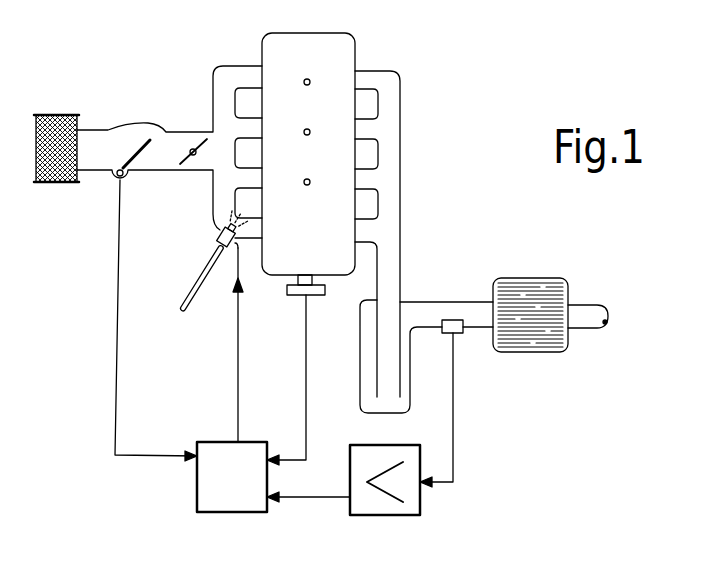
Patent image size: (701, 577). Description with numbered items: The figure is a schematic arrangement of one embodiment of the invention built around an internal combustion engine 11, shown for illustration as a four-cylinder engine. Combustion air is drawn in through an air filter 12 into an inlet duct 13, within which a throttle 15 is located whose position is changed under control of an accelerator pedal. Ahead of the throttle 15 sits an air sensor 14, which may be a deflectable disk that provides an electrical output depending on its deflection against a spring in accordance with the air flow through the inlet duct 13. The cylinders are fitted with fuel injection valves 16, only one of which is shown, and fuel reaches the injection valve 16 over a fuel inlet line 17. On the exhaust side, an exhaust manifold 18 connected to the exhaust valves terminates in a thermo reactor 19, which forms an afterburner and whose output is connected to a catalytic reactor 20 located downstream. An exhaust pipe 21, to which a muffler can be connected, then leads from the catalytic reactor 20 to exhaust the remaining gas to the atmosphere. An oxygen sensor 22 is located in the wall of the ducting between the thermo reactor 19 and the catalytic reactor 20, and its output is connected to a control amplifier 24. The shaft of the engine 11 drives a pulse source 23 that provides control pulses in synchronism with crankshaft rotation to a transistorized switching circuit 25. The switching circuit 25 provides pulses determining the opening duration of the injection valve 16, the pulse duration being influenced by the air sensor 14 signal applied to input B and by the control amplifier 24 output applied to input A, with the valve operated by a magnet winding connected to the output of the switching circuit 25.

The internal combustion engine 11 is at (348, 53).
The air filter 12 is at (65, 115).
The inlet duct 13 is at (180, 138).
The air sensor 14 is at (142, 152).
The throttle 15 is at (200, 165).
The fuel injection valve 16 is at (215, 237).
The fuel inlet line 17 is at (202, 288).
The exhaust manifold 18 is at (396, 155).
The thermo reactor 19 is at (365, 362).
The catalytic reactor 20 is at (552, 283).
The exhaust pipe 21 is at (592, 320).
The oxygen sensor 22 is at (460, 333).
The pulse source 23 is at (294, 292).
The control amplifier 24 is at (385, 508).
The transistorized switching circuit 25 is at (238, 515).
The input A is at (307, 498).
The input B is at (160, 458).